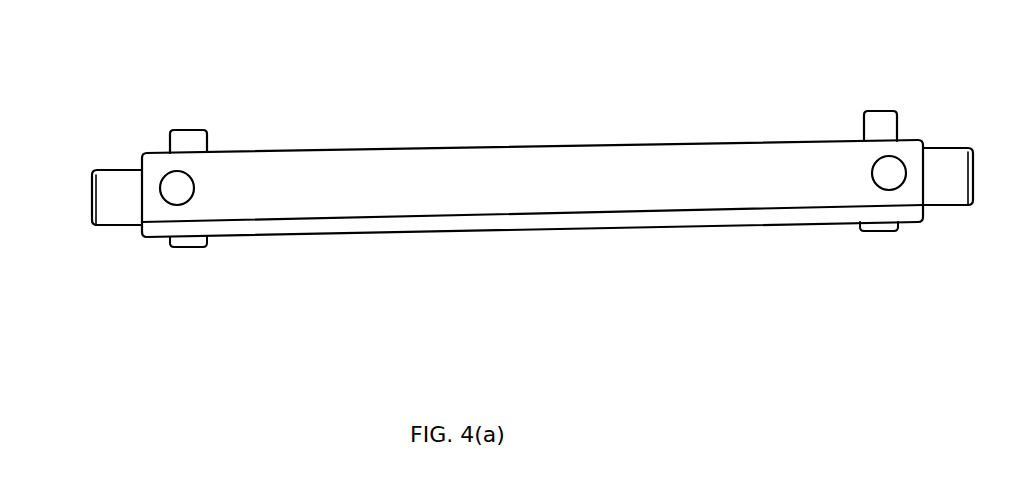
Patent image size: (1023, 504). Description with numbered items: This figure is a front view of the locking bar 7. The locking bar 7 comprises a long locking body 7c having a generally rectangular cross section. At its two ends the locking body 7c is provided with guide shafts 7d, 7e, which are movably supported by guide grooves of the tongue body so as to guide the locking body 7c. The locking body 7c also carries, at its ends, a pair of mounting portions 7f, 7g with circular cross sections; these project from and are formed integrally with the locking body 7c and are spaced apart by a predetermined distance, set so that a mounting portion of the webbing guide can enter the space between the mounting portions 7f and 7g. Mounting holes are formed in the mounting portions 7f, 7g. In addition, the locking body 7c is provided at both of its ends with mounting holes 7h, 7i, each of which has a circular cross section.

The locking bar 7 is at (374, 252).
The locking body 7c is at (727, 195).
The guide shaft 7d is at (958, 185).
The guide shaft 7e is at (113, 210).
The mounting portion 7f is at (880, 111).
The mounting portion 7g is at (196, 130).
The mounting hole 7h is at (880, 176).
The mounting hole 7i is at (178, 192).